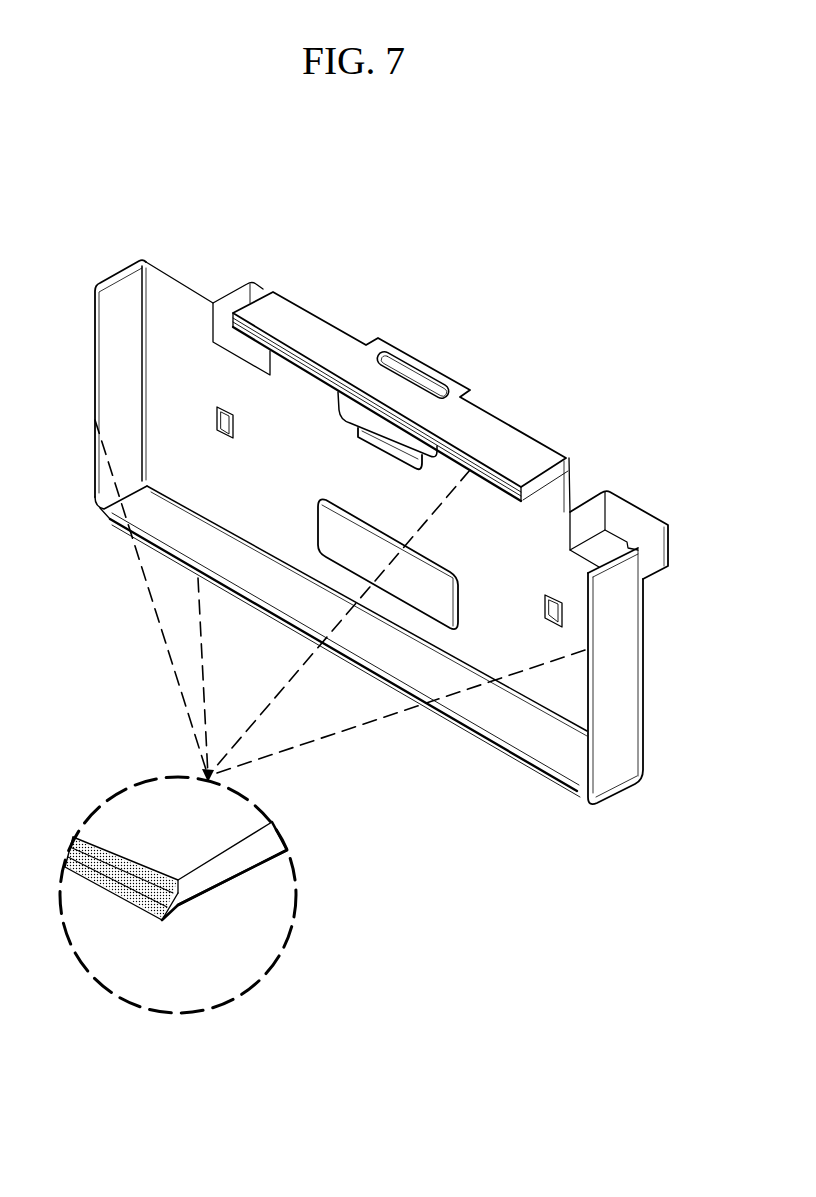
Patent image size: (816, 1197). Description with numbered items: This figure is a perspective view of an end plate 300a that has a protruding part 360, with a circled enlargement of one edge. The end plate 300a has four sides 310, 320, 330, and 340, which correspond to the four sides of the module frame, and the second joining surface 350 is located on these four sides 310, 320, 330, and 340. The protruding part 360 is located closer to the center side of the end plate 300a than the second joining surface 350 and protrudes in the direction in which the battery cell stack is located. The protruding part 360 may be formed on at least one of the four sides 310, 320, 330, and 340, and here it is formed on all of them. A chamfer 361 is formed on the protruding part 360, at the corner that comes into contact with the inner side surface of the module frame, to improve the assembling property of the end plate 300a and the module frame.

The end plate 300a is at (76, 179).
The side of the end plate 310 is at (304, 322).
The side of the end plate 320 is at (110, 372).
The side of the end plate 330 is at (628, 697).
The side of the end plate 340 is at (532, 737).
The second joining surface 350 is at (112, 847).
The protruding part 360 is at (170, 905).
The chamfer 361 is at (145, 893).